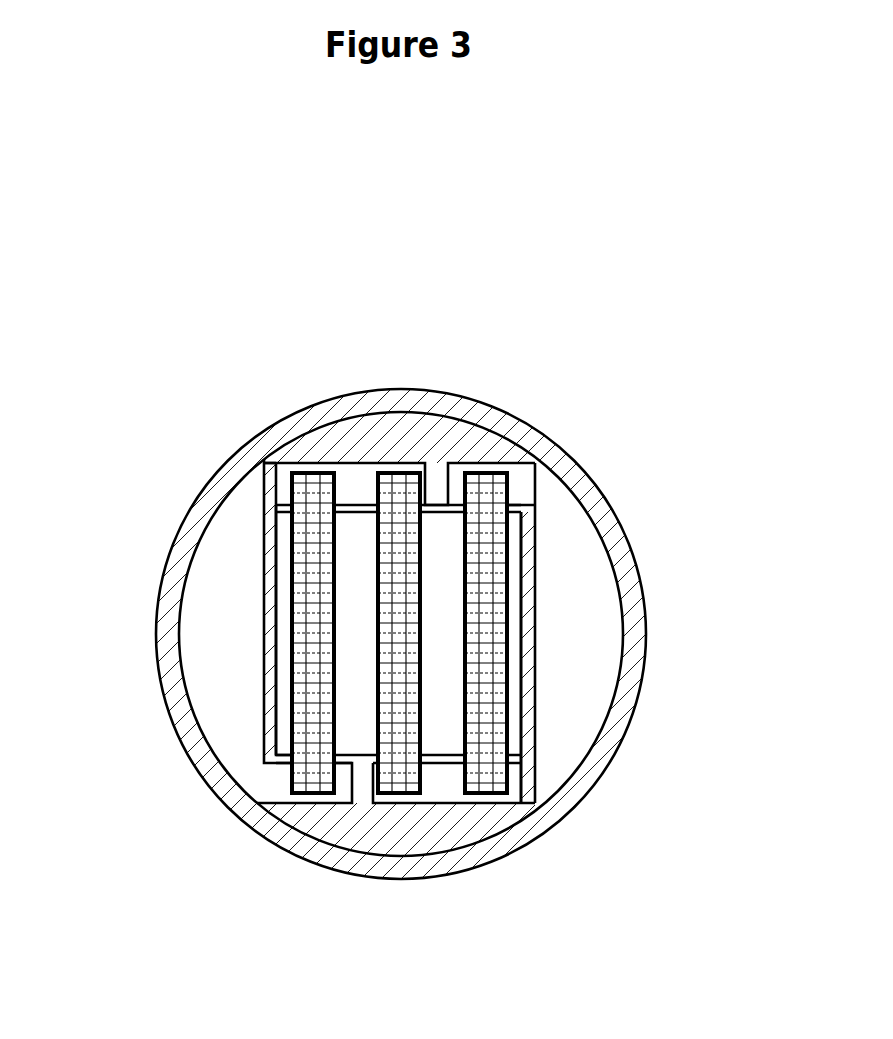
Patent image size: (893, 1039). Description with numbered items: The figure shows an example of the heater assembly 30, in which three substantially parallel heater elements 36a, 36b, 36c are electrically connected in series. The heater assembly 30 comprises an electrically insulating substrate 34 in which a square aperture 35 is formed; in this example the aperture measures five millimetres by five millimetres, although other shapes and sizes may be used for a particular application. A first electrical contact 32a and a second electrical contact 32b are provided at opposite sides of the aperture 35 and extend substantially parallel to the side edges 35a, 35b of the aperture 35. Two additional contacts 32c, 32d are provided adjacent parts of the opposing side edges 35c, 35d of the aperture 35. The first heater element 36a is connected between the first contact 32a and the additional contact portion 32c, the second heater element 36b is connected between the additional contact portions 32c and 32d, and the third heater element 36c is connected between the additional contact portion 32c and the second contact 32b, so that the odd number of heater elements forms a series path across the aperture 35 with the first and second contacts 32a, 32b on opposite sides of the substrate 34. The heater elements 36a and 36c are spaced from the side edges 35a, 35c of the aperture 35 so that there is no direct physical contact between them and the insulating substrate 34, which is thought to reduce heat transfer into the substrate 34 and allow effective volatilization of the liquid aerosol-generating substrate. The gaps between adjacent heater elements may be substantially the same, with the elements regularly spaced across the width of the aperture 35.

The heater assembly 30 is at (518, 248).
The first electrical contact 32a is at (214, 661).
The second electrical contact 32b is at (584, 572).
The additional contact portion 32c is at (381, 464).
The additional contact portion 32d is at (455, 804).
The electrically insulating substrate 34 is at (480, 416).
The aperture 35 is at (398, 637).
The side edge of the aperture 35a is at (277, 568).
The side edge of the aperture 35b is at (522, 665).
The side edge of the aperture 35c is at (432, 512).
The side edge of the aperture 35d is at (357, 755).
The first heater element 36a is at (301, 783).
The second heater element 36b is at (402, 783).
The third heater element 36c is at (491, 783).